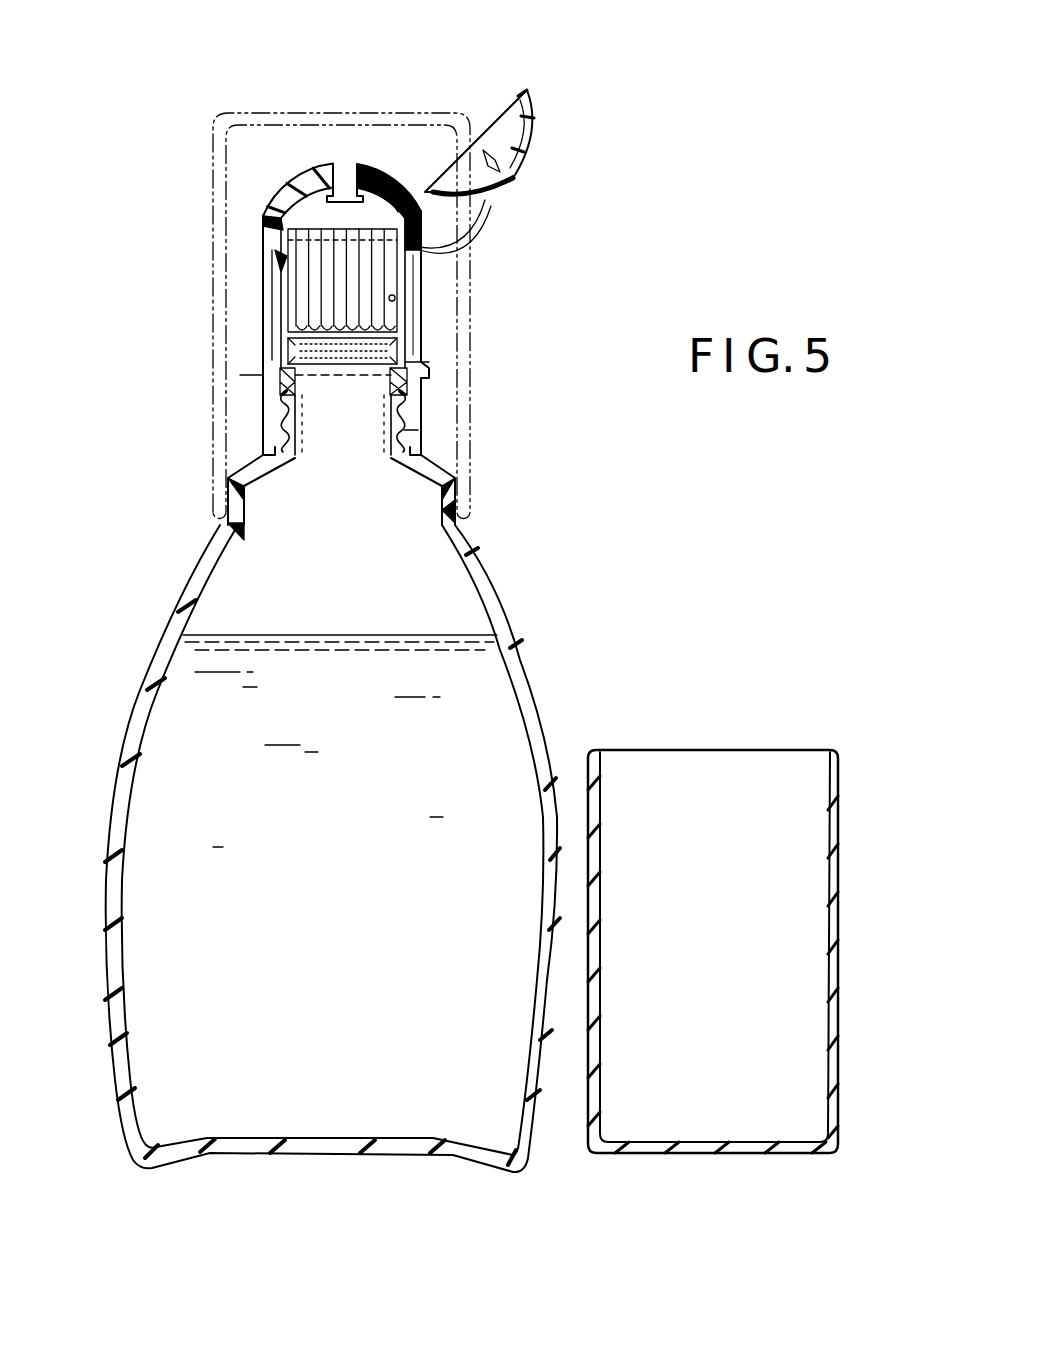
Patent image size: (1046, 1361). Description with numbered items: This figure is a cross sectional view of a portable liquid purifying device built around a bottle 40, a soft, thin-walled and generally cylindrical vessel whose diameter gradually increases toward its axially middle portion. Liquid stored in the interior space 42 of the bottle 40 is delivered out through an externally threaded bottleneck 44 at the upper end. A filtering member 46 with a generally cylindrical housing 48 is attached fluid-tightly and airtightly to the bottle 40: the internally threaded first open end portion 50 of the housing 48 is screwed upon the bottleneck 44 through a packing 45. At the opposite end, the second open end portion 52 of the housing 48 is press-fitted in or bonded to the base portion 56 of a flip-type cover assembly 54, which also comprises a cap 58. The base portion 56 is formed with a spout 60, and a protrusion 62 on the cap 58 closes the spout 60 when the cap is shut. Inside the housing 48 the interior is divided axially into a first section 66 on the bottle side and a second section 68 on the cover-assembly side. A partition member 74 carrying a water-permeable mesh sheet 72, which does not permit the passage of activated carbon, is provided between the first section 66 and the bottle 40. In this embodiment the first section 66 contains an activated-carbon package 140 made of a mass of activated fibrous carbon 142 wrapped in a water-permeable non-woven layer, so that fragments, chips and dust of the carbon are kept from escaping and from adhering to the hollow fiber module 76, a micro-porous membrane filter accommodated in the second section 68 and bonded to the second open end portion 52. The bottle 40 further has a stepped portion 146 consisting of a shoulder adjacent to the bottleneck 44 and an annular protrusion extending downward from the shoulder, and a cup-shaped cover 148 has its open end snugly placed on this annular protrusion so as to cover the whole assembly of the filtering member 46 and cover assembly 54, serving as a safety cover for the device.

The bottle 40 is at (128, 672).
The interior space 42 is at (362, 609).
The bottleneck 44 is at (398, 428).
The packing 45 is at (408, 382).
The filtering member 46 is at (434, 302).
The housing 48 is at (418, 332).
The first open end portion 50 is at (278, 428).
The second open end portion 52 is at (288, 237).
The flip-type cover assembly 54 is at (357, 108).
The base portion 56 is at (385, 186).
The cap 58 is at (534, 132).
The spout 60 is at (343, 165).
The protrusion 62 is at (490, 150).
The first section 66 is at (372, 378).
The second section 68 is at (395, 298).
The water-permeable mesh sheet 72 is at (318, 378).
The partition member 74 is at (240, 375).
The hollow fiber module 76 is at (281, 292).
The activated-carbon package 140 is at (342, 375).
The activated fibrous carbon 142 is at (288, 350).
The stepped portion 146 is at (450, 494).
The cup-shaped cover 148 is at (210, 147).